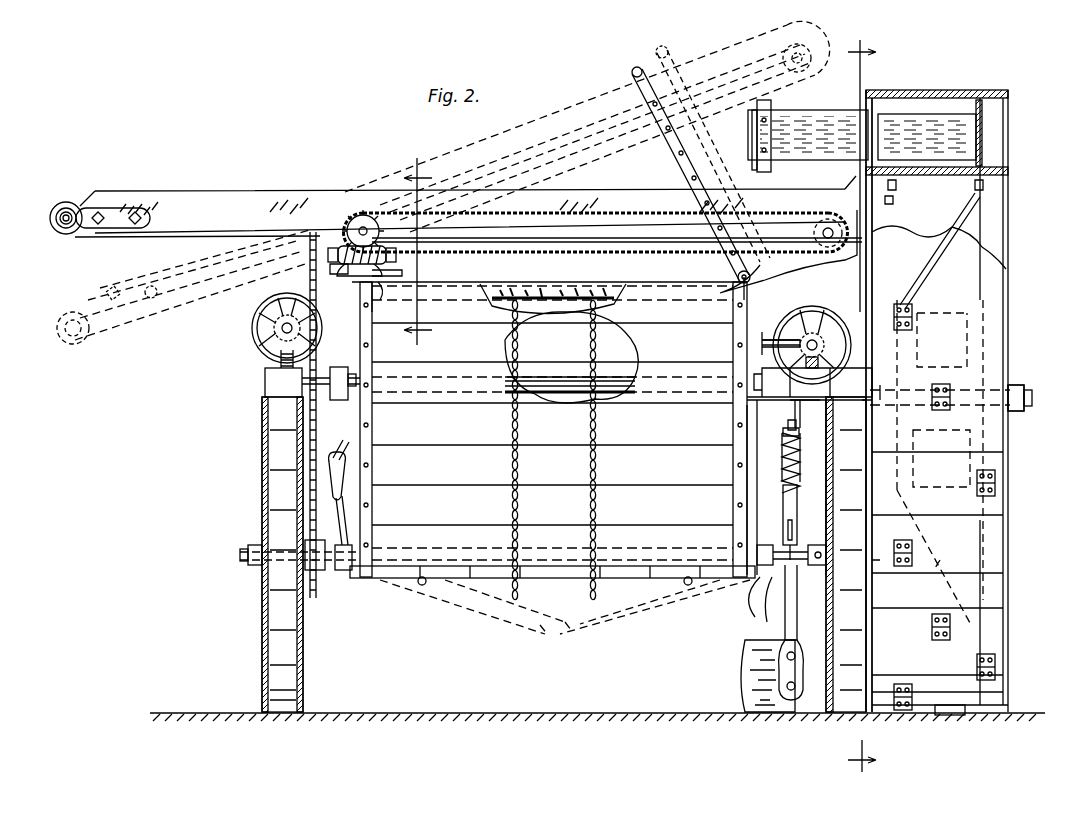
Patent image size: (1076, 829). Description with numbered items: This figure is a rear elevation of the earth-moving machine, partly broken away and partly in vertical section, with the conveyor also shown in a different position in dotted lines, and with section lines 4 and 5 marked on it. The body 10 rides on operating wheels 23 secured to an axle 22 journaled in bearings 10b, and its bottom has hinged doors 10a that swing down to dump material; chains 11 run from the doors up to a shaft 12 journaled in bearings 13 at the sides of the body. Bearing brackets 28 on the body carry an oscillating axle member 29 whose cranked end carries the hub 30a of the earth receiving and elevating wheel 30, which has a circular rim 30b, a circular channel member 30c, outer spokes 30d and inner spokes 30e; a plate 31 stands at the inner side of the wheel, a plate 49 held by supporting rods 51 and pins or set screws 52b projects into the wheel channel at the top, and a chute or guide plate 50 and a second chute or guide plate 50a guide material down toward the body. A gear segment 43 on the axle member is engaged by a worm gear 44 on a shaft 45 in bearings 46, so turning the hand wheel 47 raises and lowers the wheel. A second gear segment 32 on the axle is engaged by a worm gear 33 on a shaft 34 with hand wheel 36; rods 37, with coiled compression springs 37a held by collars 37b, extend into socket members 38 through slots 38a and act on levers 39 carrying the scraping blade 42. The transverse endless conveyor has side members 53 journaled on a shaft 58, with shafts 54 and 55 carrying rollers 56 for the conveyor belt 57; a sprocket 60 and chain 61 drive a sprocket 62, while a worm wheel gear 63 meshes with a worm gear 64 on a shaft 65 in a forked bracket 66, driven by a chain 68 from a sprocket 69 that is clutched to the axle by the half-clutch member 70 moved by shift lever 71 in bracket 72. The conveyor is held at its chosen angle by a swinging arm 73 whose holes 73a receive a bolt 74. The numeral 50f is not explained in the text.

The section line 4- 4 is at (418, 251).
The section line 5- 5 is at (862, 410).
The body 10 is at (657, 577).
The hinged doors 10a is at (552, 570).
The bearings 10b is at (747, 576).
The chains 11 is at (514, 404).
The shaft 12 is at (594, 294).
The bearings 13 is at (348, 282).
The axle 22 is at (752, 606).
The operating wheels 23 is at (260, 596).
The bearing brackets 28 is at (338, 400).
The axle member 29 is at (555, 376).
The earth receiving and elevating wheel 30 is at (1004, 88).
The hub 30a is at (998, 372).
The circular rim 30b is at (942, 90).
The circular channel member 30c is at (990, 120).
The outer spokes 30d is at (972, 230).
The inner spokes 30e is at (952, 238).
The plate 31 is at (872, 256).
The gear segment 32 is at (803, 398).
The worm gear 33 is at (816, 332).
The shaft 34 is at (802, 316).
The hand wheel 36 is at (918, 292).
The rods 37 is at (800, 462).
The coiled compression springs 37a is at (782, 482).
The collars 37b is at (784, 442).
The socket members 38 is at (790, 508).
The slots 38a is at (788, 522).
The bars or levers 39 is at (800, 582).
The scraping member or blade 42 is at (742, 668).
The gear segment 43 is at (268, 390).
The worm gear 44 is at (258, 334).
The shaft 45 is at (270, 314).
The bearings 46 is at (331, 351).
The hand wheel 47 is at (252, 318).
The plate 49 is at (826, 128).
The chute or guide plate 50 is at (855, 178).
The chute or guide plate 50a is at (826, 306).
The clip 50f is at (912, 554).
The supporting rods 51 is at (755, 140).
The pins or set screws 52b is at (751, 130).
The longitudinally extending members 53 is at (206, 192).
The shaft 54 is at (66, 205).
The shaft 55 is at (844, 202).
The rollers 56 is at (68, 229).
The conveyor belt 57 is at (130, 235).
The shaft 58 is at (362, 212).
The sprocket 60 is at (370, 214).
The chain 61 is at (583, 194).
The sprocket 62 is at (335, 252).
The worm wheel gear 63 is at (348, 216).
The worm gear 64 is at (415, 264).
The shaft 65 is at (306, 272).
The forked bracket 66 is at (380, 290).
The chain 68 is at (343, 444).
The sprocket 69 is at (318, 596).
The slidable half-clutch member 70 is at (346, 578).
The shift lever 71 is at (343, 520).
The bracket 72 is at (346, 486).
The swinging arm 73 is at (668, 156).
The holes 73a is at (704, 182).
The headed and nutted bolt 74 is at (725, 260).